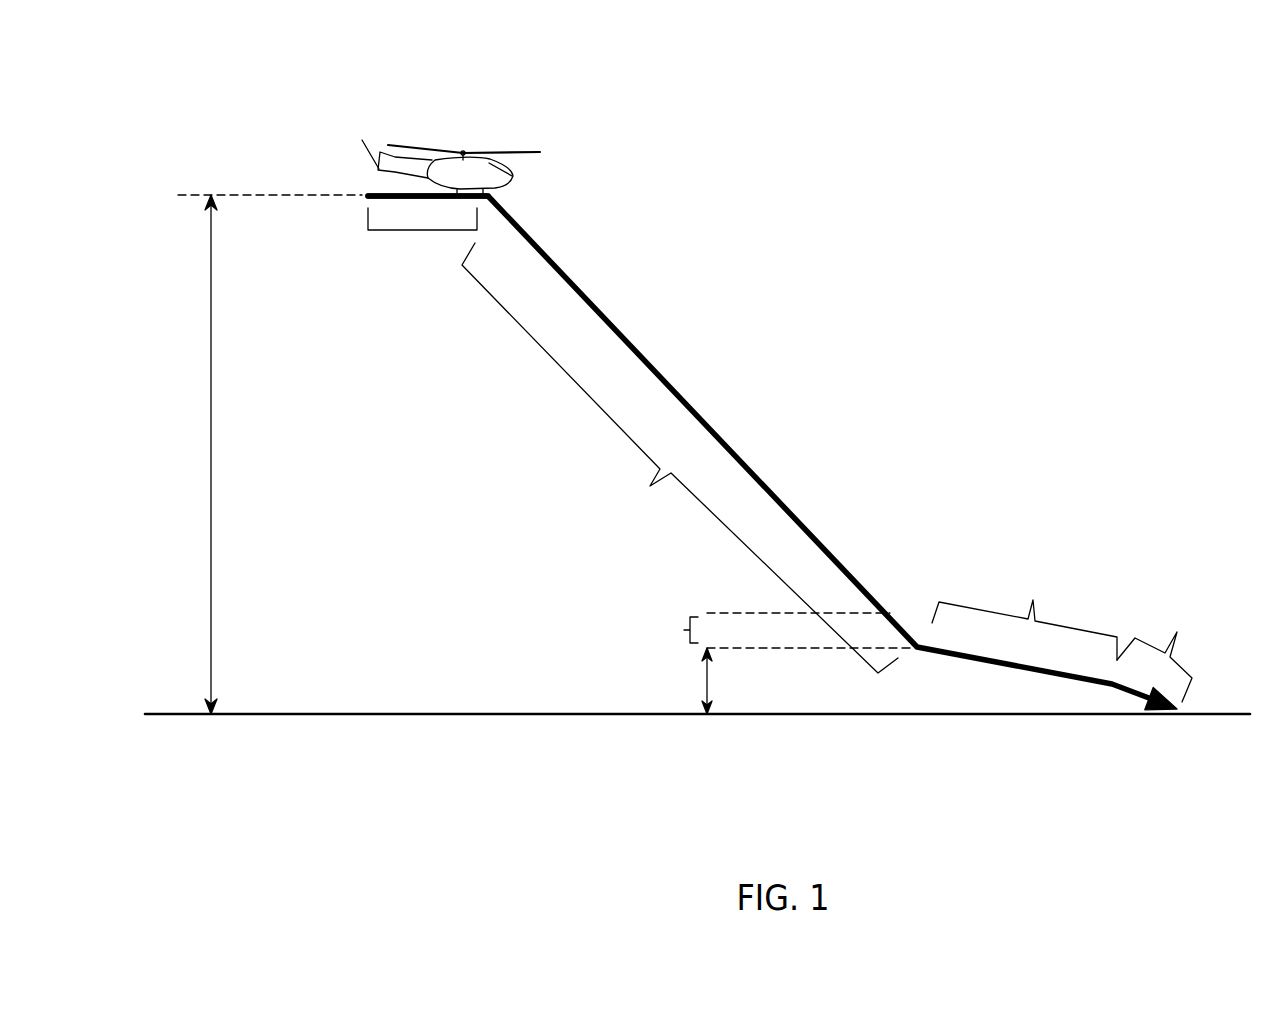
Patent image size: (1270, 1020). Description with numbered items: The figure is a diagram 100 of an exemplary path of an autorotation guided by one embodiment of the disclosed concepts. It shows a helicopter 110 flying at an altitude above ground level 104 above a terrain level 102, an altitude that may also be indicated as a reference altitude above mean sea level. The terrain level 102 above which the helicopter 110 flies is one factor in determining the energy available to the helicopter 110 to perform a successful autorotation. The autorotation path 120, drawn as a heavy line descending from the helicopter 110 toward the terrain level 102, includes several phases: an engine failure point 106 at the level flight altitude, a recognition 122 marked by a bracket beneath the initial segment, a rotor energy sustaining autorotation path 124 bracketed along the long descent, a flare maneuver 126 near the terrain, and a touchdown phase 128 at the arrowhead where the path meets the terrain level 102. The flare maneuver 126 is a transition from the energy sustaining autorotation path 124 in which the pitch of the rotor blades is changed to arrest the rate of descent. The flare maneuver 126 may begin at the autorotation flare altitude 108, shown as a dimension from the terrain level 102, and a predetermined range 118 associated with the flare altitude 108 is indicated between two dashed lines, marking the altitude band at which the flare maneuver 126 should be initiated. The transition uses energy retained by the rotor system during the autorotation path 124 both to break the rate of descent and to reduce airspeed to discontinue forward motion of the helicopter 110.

The diagram 100 is at (197, 137).
The terrain level 102 is at (268, 714).
The altitude above ground level 104 is at (210, 310).
The engine failure point 106 is at (360, 196).
The autorotation flare altitude 108 is at (703, 693).
The helicopter 110 is at (464, 152).
The predetermined range 118 is at (684, 630).
The autorotation path 120 is at (658, 373).
The recognition 122 is at (422, 230).
The rotor energy sustaining autorotation path 124 is at (680, 458).
The flare maneuver 126 is at (1024, 614).
The touchdown phase 128 is at (1166, 658).